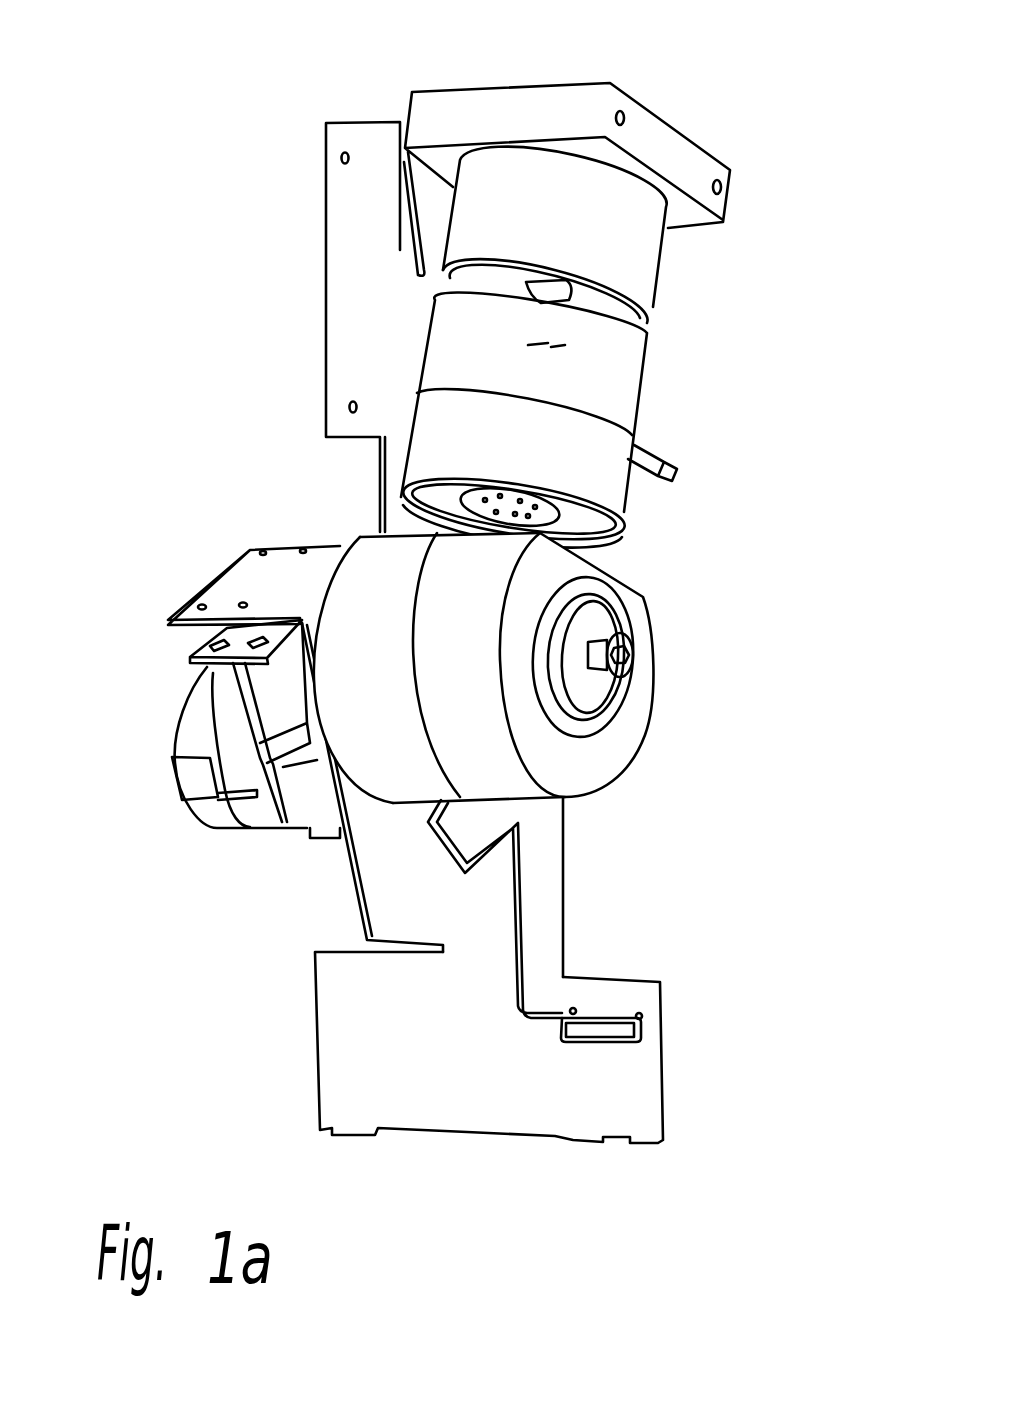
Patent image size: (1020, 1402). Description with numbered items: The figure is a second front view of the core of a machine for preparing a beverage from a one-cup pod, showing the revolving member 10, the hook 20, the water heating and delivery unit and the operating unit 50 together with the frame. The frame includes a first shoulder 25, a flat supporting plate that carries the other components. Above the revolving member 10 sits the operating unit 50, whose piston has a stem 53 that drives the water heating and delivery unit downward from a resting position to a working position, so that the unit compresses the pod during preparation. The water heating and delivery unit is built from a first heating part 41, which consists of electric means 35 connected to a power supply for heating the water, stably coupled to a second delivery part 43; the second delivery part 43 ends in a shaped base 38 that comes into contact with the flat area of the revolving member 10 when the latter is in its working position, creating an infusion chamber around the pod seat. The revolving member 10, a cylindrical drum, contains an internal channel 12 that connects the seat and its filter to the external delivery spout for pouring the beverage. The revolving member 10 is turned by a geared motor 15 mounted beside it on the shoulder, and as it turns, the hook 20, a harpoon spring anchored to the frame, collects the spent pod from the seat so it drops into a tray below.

The operating unit 50 is at (652, 142).
The first shoulder 25 is at (352, 236).
The stem 53 is at (590, 265).
The first heating part 41 is at (624, 369).
The electric means 35 is at (658, 456).
The second delivery part 43 is at (617, 498).
The shaped base 38 is at (600, 555).
The internal channel 12 is at (628, 650).
The revolving member 10 is at (633, 733).
The geared motor 15 is at (197, 780).
The hook 20 is at (527, 915).